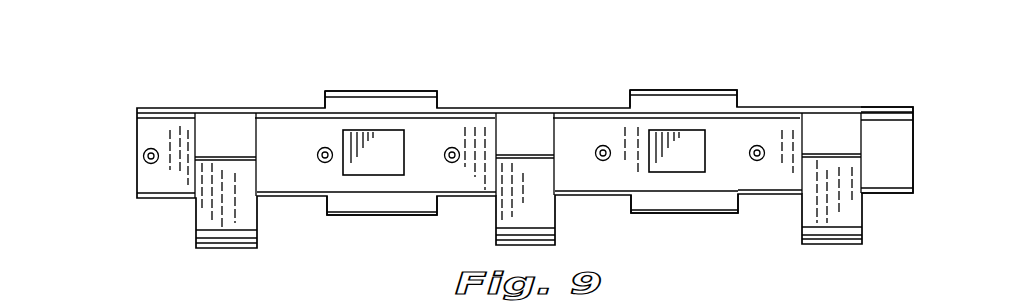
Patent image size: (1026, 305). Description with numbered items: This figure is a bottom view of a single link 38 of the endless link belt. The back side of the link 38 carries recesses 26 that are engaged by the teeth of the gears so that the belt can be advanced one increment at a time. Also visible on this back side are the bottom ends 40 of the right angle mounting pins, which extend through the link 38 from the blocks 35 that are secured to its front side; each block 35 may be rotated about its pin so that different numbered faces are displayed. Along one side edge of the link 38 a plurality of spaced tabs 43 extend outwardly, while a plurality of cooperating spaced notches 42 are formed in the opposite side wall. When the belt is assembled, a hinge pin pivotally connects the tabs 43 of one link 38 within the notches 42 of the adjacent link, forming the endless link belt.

The recess 26 is at (396, 143).
The block 35 is at (391, 92).
The link 38 is at (897, 153).
The bottom end of right angle mounting pin 40 is at (144, 160).
The notch 42 is at (198, 130).
The tab 43 is at (258, 240).